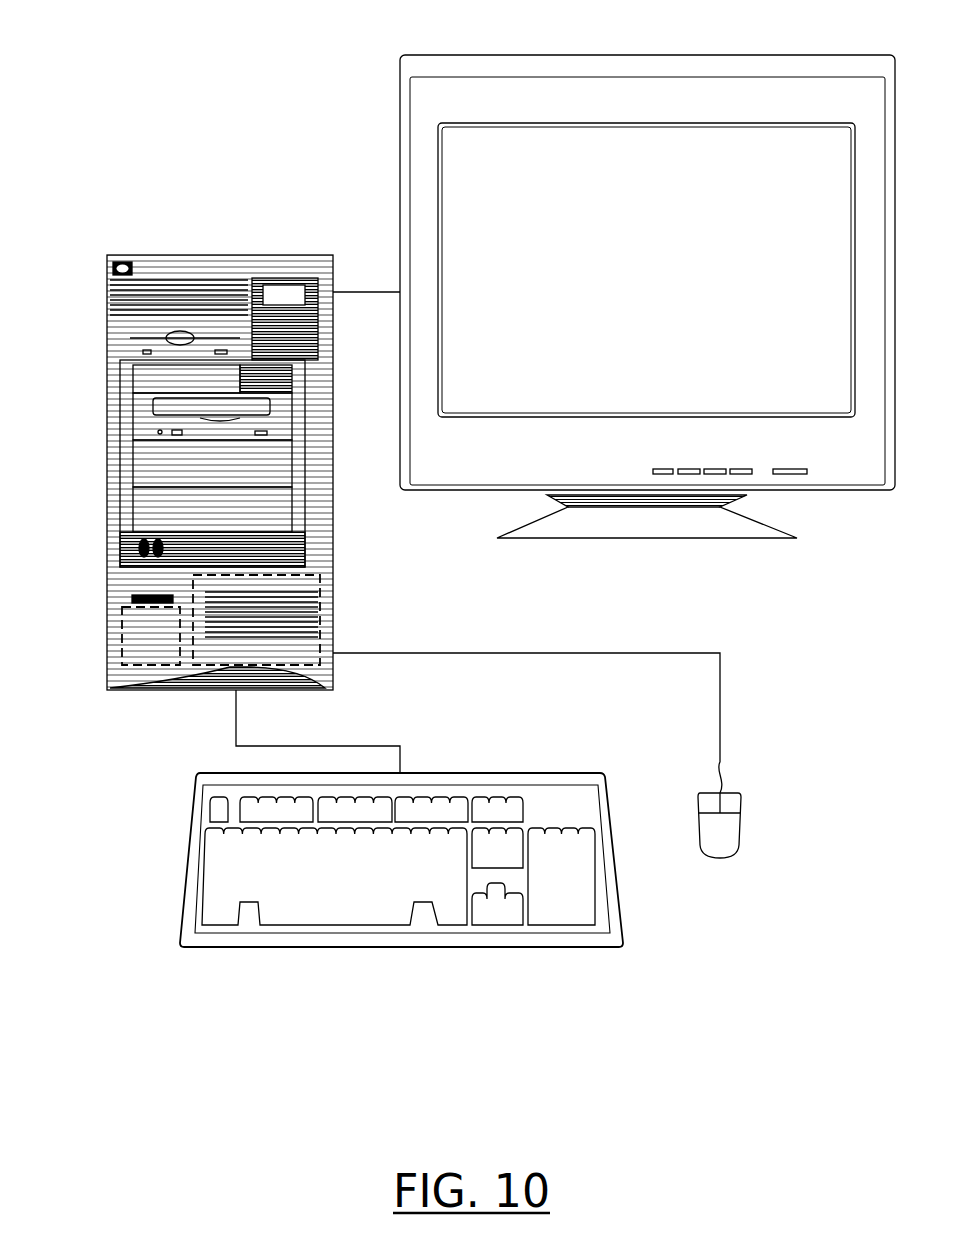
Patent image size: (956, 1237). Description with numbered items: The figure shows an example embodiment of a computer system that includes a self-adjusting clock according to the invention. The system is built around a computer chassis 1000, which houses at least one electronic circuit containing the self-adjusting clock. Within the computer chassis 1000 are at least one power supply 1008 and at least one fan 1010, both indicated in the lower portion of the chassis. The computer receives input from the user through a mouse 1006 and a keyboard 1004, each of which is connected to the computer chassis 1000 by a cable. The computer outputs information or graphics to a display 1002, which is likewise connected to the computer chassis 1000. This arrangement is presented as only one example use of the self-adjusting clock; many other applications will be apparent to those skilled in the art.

The computer chassis 1000 is at (275, 255).
The display 1002 is at (398, 55).
The keyboard 1004 is at (190, 795).
The mouse 1006 is at (730, 807).
The power supply 1008 is at (320, 620).
The fan 1010 is at (122, 635).